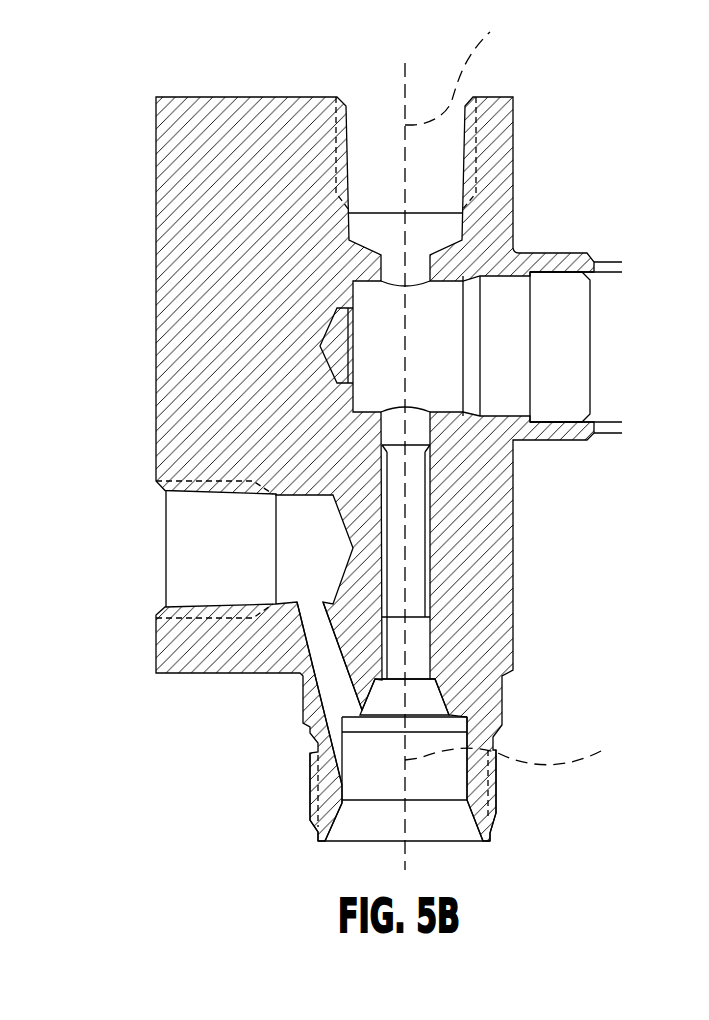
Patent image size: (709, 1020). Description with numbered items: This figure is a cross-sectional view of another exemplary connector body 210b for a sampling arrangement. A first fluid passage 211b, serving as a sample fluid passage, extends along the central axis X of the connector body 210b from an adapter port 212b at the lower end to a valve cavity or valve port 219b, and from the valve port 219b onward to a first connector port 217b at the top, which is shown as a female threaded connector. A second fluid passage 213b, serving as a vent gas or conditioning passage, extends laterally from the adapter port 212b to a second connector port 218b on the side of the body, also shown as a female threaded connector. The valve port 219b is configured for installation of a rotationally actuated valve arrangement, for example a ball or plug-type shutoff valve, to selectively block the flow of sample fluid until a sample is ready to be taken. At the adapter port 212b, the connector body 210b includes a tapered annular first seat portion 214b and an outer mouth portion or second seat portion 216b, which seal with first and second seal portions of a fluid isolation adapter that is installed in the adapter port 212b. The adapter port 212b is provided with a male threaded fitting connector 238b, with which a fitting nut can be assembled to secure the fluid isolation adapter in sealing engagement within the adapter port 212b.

The connector body 210b is at (578, 113).
The first connector port 217b is at (347, 140).
The valve port 219b is at (482, 287).
The first fluid passage 211b is at (425, 582).
The tapered annular first seat portion 214b is at (447, 690).
The adapter port 212b is at (483, 785).
The second seat portion 216b is at (478, 810).
The male threaded fitting connector 238b is at (318, 794).
The second connector port 218b is at (156, 578).
The second fluid passage 213b is at (344, 686).